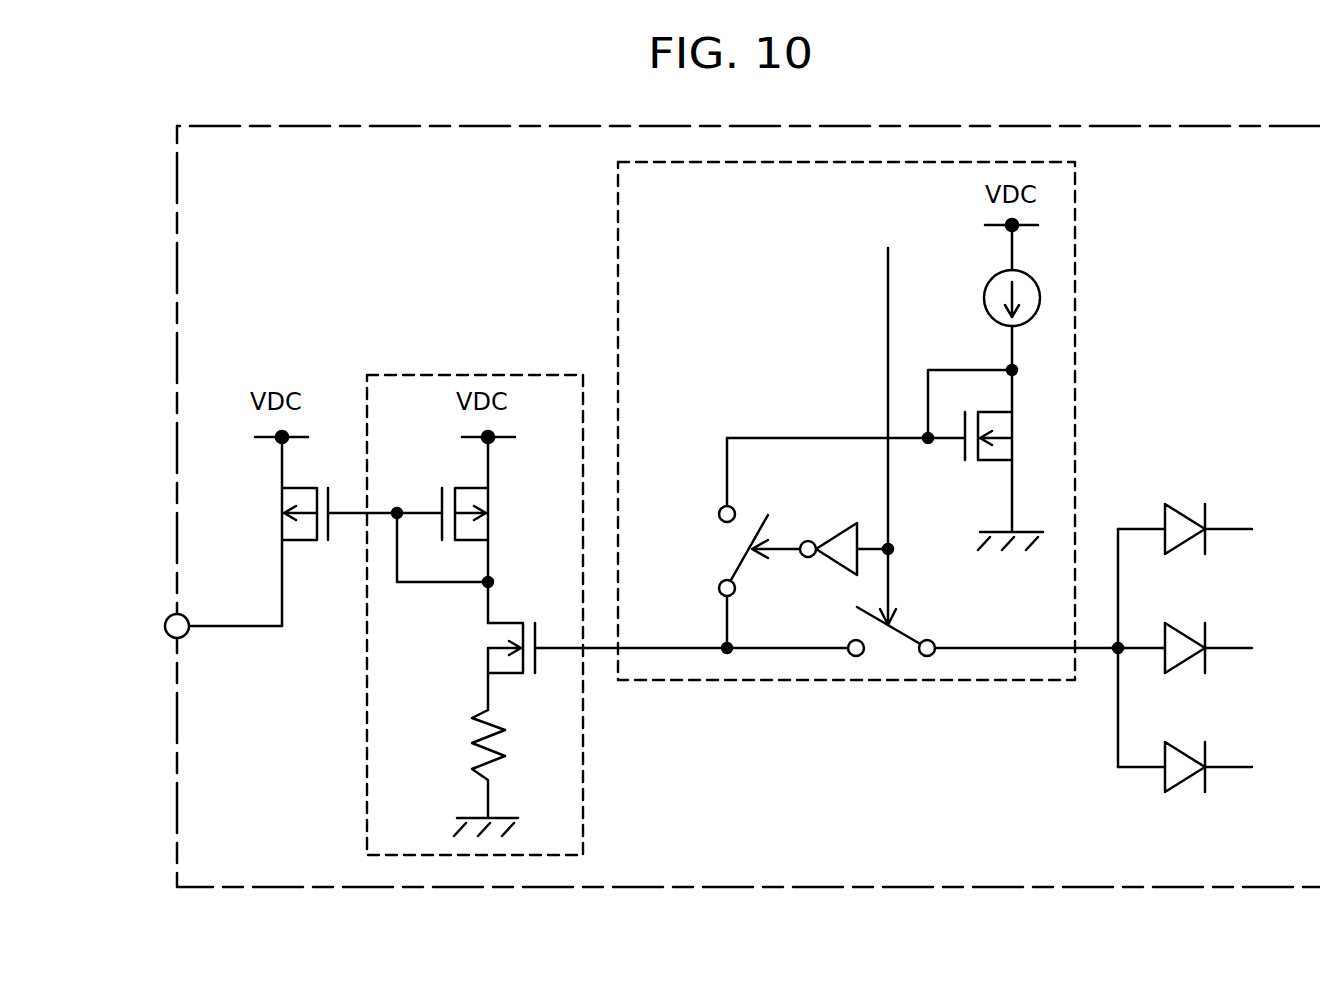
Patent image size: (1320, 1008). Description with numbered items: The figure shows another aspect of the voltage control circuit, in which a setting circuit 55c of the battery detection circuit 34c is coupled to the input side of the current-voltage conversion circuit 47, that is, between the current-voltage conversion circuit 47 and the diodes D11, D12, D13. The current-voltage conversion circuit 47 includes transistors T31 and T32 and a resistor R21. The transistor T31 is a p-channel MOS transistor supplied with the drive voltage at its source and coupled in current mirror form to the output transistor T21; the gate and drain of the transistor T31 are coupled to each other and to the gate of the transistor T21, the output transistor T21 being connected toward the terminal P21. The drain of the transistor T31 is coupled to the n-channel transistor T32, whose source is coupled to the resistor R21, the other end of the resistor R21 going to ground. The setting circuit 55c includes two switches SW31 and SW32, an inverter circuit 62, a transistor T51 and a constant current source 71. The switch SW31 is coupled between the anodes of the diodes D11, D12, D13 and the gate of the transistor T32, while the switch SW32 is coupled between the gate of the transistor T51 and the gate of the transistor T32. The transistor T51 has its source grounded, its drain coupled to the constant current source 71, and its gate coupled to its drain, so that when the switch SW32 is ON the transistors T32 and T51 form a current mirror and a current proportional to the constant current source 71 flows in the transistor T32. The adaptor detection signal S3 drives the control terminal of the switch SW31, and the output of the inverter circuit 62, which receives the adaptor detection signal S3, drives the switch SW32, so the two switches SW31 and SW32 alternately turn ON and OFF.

The battery detection circuit 34c is at (1138, 126).
The setting circuit 55c is at (1076, 274).
The current-voltage conversion circuit 47 is at (515, 374).
The input terminal P21 is at (167, 634).
The output transistor T21 is at (293, 537).
The transistor T31 is at (488, 540).
The transistor T32 is at (505, 623).
The resistor R21 is at (505, 750).
The switch SW32 is at (742, 560).
The inverter circuit 62 is at (842, 530).
The adaptor detection signal S3 is at (891, 418).
The switch SW31 is at (903, 633).
The constant current source 71 is at (985, 295).
The transistor T51 is at (995, 462).
The diode D11 is at (1207, 515).
The diode D12 is at (1207, 634).
The diode D13 is at (1207, 753).